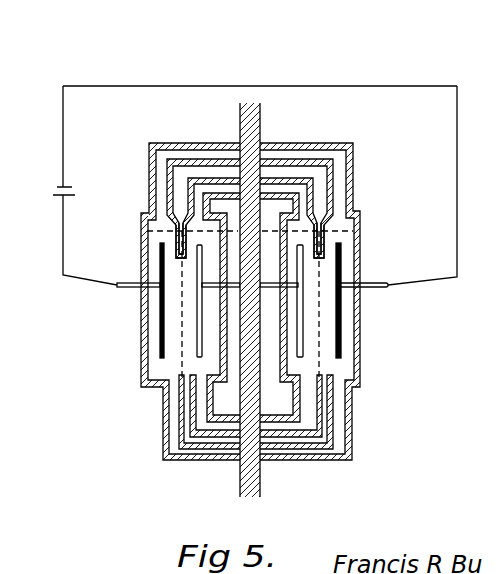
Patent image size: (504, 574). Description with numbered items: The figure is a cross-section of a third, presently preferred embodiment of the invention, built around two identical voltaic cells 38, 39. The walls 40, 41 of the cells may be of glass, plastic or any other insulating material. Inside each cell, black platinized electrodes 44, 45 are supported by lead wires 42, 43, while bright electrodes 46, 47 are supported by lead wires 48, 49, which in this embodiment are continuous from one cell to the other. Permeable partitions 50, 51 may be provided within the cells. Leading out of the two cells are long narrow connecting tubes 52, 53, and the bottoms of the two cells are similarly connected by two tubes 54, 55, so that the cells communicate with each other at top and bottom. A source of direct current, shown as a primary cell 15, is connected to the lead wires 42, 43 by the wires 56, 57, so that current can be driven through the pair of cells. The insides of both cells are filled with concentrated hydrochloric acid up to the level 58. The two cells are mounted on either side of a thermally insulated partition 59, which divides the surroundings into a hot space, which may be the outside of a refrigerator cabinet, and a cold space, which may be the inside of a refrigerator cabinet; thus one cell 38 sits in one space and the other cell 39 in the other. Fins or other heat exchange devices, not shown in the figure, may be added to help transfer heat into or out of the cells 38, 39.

The primary cell 15 is at (57, 189).
The voltaic cell 38 is at (160, 367).
The voltaic cell 39 is at (330, 369).
The wall 40 is at (141, 303).
The wall 41 is at (361, 312).
The lead wire 42 is at (125, 283).
The lead wire 43 is at (373, 283).
The black platinized electrode 44 is at (160, 325).
The black platinized electrode 45 is at (341, 336).
The bright electrode 46 is at (200, 337).
The bright electrode 47 is at (303, 340).
The lead wire 48 is at (232, 281).
The lead wire 49 is at (268, 281).
The permeable partition 50 is at (182, 358).
The permeable partition 51 is at (346, 373).
The connecting tube 52 is at (160, 197).
The connecting tube 53 is at (200, 188).
The tube 54 is at (203, 428).
The tube 55 is at (173, 454).
The wire 56 is at (63, 263).
The wire 57 is at (458, 223).
The level 58 is at (162, 229).
The thermally insulated partition 59 is at (253, 475).